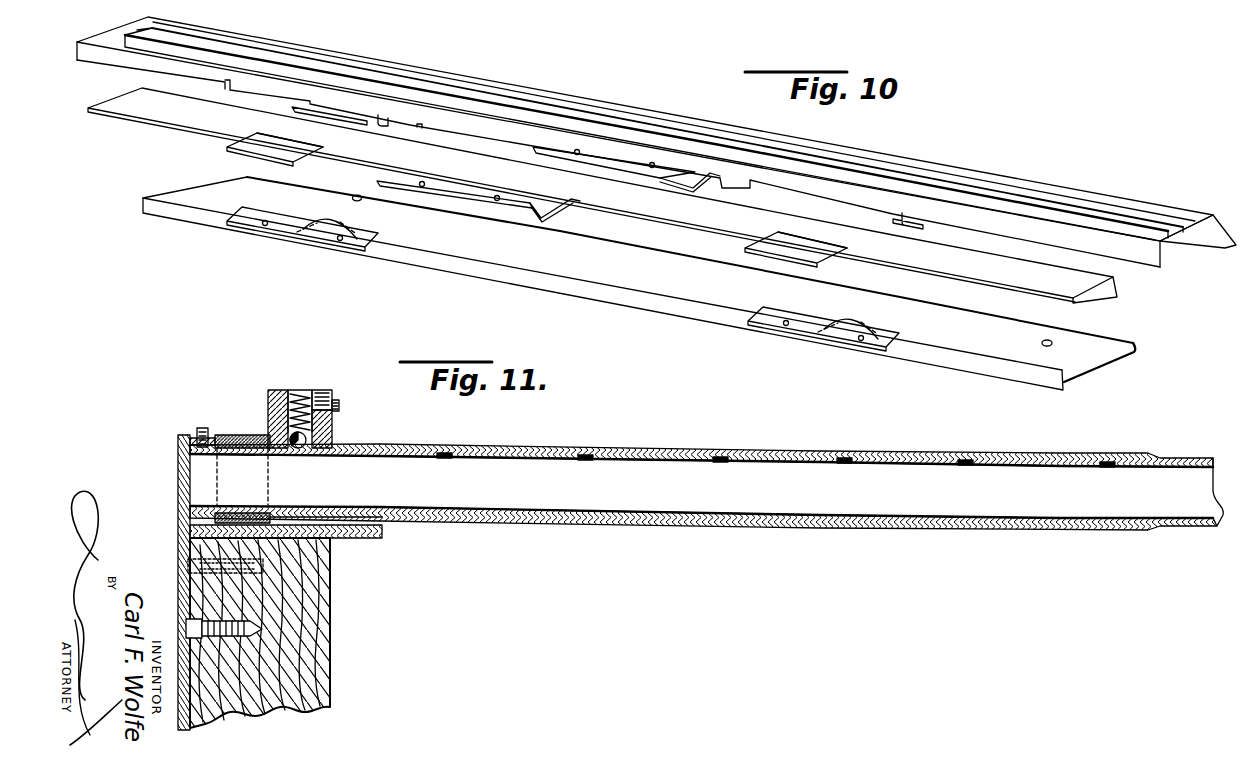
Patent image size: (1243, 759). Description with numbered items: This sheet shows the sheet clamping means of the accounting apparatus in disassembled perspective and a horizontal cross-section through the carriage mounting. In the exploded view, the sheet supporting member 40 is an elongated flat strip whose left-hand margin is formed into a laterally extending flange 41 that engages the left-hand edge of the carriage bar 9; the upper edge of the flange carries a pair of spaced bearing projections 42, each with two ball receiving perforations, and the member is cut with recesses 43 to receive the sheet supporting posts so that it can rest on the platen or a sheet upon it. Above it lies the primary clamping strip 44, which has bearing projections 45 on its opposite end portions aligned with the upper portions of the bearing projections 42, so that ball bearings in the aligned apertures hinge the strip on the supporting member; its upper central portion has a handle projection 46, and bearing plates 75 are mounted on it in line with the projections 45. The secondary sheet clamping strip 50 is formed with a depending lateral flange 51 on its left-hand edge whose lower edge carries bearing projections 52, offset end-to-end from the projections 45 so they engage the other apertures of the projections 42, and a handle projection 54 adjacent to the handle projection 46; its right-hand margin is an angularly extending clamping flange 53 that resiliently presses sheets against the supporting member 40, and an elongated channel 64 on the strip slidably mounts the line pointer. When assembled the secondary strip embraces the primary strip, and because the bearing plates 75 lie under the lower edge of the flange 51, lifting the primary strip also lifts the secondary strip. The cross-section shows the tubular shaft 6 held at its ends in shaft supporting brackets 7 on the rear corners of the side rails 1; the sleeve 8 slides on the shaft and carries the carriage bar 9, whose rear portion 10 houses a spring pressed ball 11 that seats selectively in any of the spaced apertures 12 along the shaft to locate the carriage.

In FIG. 11, the side rails 1 is at (332, 657).
In FIG. 11, the tubular shaft 6 is at (725, 496).
In FIG. 11, the shaft supporting brackets 7 is at (178, 478).
In FIG. 11, the sleeve 8 is at (533, 445).
In FIG. 11, the carriage bar 9 is at (279, 392).
In FIG. 11, the rear portion of the carriage bar structure 10 is at (334, 422).
In FIG. 11, the spring pressed ball 11 is at (272, 438).
In FIG. 11, the apertures 12 is at (300, 450).
In FIG. 10, the sheet supporting member 40 is at (977, 339).
In FIG. 10, the laterally extending flange 41 is at (1005, 373).
In FIG. 10, the bearing projections 42 is at (248, 221).
In FIG. 10, the recesses 43 is at (354, 227).
In FIG. 10, the primary clamping strip 44 is at (636, 201).
In FIG. 10, the bearing projections 45 is at (300, 166).
In FIG. 10, the handle projection 46 is at (546, 207).
In FIG. 10, the secondary sheet clamping strip 50 is at (1035, 186).
In FIG. 10, the depending lateral flange 51 is at (1147, 254).
In FIG. 10, the bearing projections 52 is at (323, 108).
In FIG. 10, the clamping flange 53 is at (1225, 230).
In FIG. 10, the handle projection 54 is at (694, 178).
In FIG. 10, the elongated channel 64 is at (1130, 219).
In FIG. 10, the bearing plates 75 is at (271, 141).